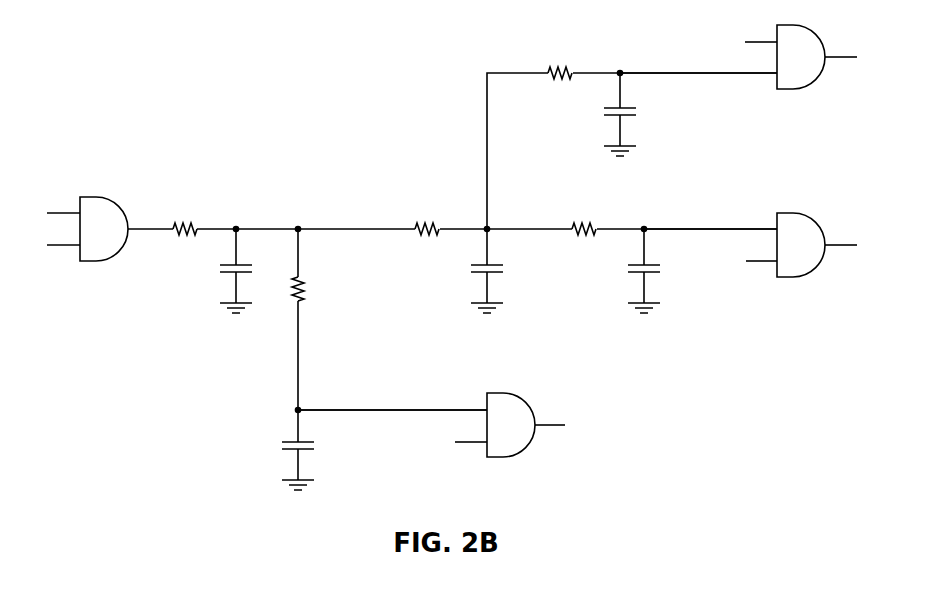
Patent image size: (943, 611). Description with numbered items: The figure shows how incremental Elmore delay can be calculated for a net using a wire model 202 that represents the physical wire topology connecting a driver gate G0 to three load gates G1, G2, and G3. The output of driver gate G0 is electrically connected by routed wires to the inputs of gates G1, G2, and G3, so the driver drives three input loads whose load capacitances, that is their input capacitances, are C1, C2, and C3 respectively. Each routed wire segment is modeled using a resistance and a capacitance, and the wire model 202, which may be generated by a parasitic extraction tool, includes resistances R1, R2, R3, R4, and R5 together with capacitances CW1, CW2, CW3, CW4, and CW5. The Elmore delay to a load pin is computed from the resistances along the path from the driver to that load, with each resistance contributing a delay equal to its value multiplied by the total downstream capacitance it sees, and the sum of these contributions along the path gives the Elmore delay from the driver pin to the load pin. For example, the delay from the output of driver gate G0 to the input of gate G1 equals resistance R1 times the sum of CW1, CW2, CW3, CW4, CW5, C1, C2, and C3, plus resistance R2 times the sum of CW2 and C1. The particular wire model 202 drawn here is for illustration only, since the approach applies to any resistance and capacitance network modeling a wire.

The wire model 202 is at (303, 116).
The driver gate G0 is at (110, 229).
The gate G1 is at (510, 425).
The gate G2 is at (801, 57).
The gate G3 is at (801, 245).
The resistance R1 is at (185, 216).
The resistance R2 is at (314, 289).
The resistance R3 is at (427, 216).
The resistance R4 is at (560, 59).
The resistance R5 is at (584, 216).
The capacitance CW1 is at (216, 271).
The capacitance CW2 is at (278, 450).
The capacitance CW3 is at (509, 271).
The capacitance CW4 is at (641, 114).
The capacitance CW5 is at (625, 271).
The load capacitance C1 is at (392, 397).
The load capacitance C2 is at (698, 85).
The load capacitance C3 is at (710, 217).